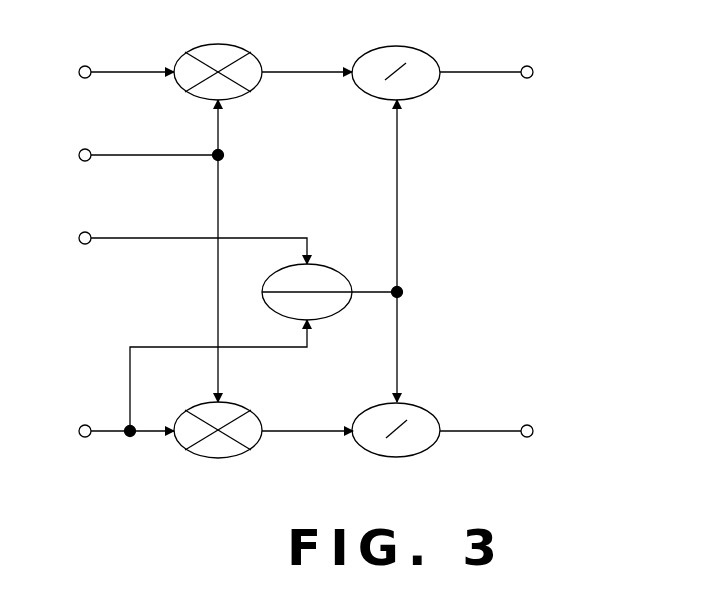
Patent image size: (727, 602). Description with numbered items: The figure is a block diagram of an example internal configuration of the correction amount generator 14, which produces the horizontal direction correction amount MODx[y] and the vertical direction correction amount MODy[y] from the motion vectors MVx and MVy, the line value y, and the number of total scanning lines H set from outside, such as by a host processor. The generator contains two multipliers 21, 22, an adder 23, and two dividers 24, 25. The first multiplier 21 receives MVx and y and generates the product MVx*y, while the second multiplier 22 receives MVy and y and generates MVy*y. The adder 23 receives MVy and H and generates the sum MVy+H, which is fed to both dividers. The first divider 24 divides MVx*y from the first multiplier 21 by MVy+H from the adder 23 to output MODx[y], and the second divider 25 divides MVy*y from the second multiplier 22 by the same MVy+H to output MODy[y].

The correction amount generator 14 is at (310, 505).
The first multiplier 21 is at (221, 44).
The second multiplier 22 is at (243, 403).
The adder 23 is at (335, 268).
The first divider 24 is at (397, 45).
The second divider 25 is at (420, 405).